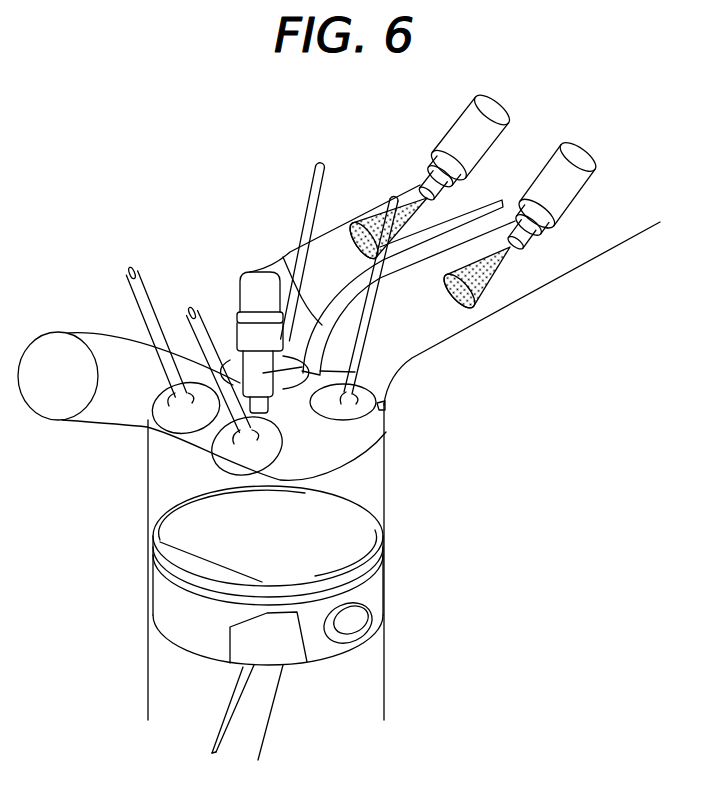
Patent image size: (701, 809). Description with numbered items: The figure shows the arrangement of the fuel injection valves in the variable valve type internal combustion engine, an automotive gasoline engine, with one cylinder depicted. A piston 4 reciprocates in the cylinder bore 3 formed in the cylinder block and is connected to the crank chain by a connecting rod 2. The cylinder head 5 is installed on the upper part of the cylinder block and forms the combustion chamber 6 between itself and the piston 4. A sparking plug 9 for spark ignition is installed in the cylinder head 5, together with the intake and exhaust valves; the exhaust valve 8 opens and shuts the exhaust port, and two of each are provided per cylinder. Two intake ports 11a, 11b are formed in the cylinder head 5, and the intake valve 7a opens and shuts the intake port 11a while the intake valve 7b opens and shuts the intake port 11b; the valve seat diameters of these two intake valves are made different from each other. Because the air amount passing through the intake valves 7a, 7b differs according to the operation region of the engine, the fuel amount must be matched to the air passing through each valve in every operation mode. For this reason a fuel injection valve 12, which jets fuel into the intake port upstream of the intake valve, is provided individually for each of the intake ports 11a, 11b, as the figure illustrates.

The connecting rod 2 is at (233, 733).
The cylinder bore 3 is at (357, 675).
The piston 4 is at (150, 618).
The cylinder head 5 is at (333, 443).
The combustion chamber 6 is at (355, 487).
The intake valve 7a is at (345, 385).
The intake valve 7b is at (352, 410).
The exhaust valve 8 is at (213, 463).
The sparking plug 9 is at (238, 278).
The intake port 11a is at (330, 243).
The intake port 11b is at (520, 287).
The fuel injection valve 12 is at (563, 178).